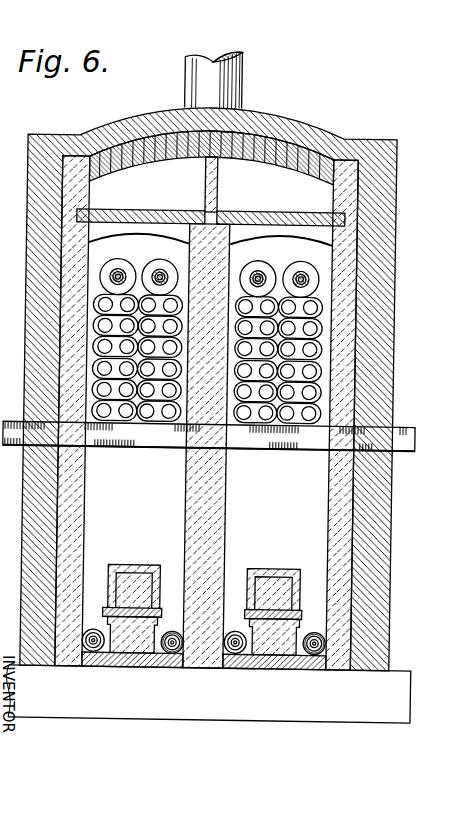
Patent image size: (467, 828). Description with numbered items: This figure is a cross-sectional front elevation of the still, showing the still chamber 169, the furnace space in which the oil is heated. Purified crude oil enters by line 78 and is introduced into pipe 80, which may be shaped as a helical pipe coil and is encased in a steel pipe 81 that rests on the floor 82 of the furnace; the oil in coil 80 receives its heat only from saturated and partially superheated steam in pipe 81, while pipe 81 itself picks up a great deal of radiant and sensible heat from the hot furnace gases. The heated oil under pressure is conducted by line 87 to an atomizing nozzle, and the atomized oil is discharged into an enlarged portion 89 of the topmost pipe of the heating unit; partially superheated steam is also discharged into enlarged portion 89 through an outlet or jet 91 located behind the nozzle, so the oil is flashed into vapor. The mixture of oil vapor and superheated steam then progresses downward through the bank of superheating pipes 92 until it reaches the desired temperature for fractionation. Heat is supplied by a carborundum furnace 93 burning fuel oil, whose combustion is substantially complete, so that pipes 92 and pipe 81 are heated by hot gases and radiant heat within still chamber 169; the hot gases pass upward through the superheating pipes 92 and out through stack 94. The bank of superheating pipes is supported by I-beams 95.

The stack 94 is at (226, 84).
The still chamber 169 is at (335, 280).
The I-beams 95 is at (411, 443).
The line 87 is at (158, 278).
The enlarged portion 89 is at (118, 268).
The outlet or jet 91 is at (116, 278).
The superheating pipes 92 is at (104, 419).
The carborundum furnace 93 is at (135, 567).
The line 78 is at (172, 652).
The pipe 80 is at (176, 632).
The steel pipe 81 is at (177, 654).
The floor 82 is at (309, 668).